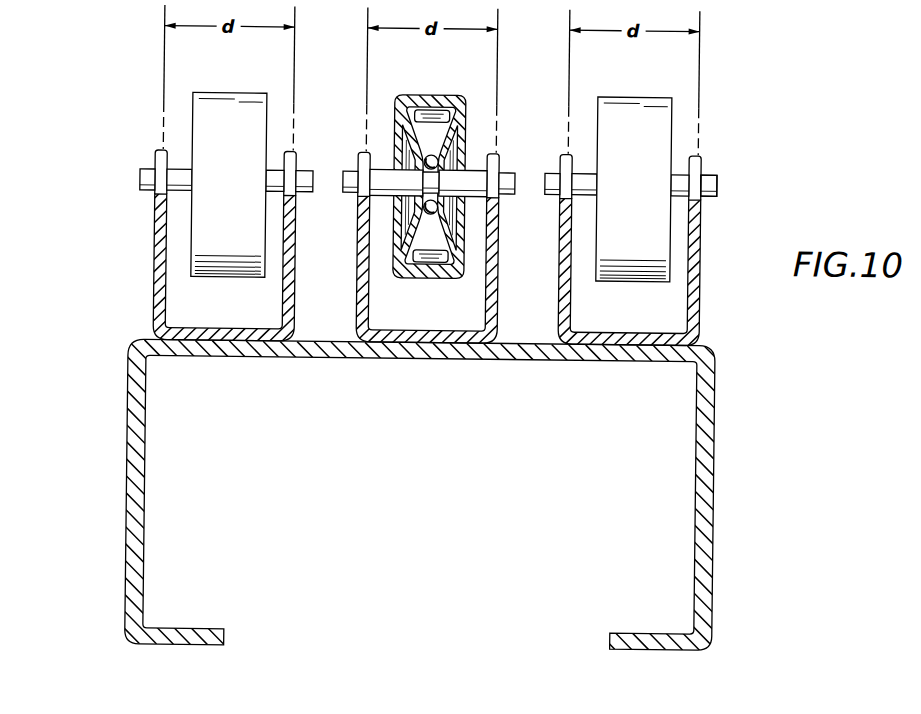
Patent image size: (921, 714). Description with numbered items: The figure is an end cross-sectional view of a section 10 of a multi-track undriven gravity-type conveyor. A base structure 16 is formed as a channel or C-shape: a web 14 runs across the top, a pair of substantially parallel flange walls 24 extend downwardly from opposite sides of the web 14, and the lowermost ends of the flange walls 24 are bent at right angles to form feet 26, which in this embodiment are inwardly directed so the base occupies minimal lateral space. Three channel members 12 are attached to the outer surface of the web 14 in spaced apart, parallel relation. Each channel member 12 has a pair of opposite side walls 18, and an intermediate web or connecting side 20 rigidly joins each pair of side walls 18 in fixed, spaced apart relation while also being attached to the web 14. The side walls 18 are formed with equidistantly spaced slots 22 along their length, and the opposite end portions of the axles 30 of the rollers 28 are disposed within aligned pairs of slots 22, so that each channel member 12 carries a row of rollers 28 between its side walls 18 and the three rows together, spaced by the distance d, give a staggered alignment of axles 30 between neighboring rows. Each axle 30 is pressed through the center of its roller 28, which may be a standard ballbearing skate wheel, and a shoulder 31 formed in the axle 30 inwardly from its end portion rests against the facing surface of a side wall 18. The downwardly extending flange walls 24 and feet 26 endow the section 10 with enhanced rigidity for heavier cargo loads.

The multi-track undriven gravity-type conveyor section 10 is at (116, 180).
The channel member 12 is at (153, 258).
The web 14 is at (526, 343).
The base structure 16 is at (717, 445).
The side wall 18 is at (152, 312).
The connecting side 20 is at (191, 329).
The slot 22 is at (153, 158).
The flange wall 24 is at (146, 542).
The foot 26 is at (656, 632).
The roller 28 is at (438, 69).
The axle 30 is at (716, 196).
The shoulder 31 is at (180, 197).